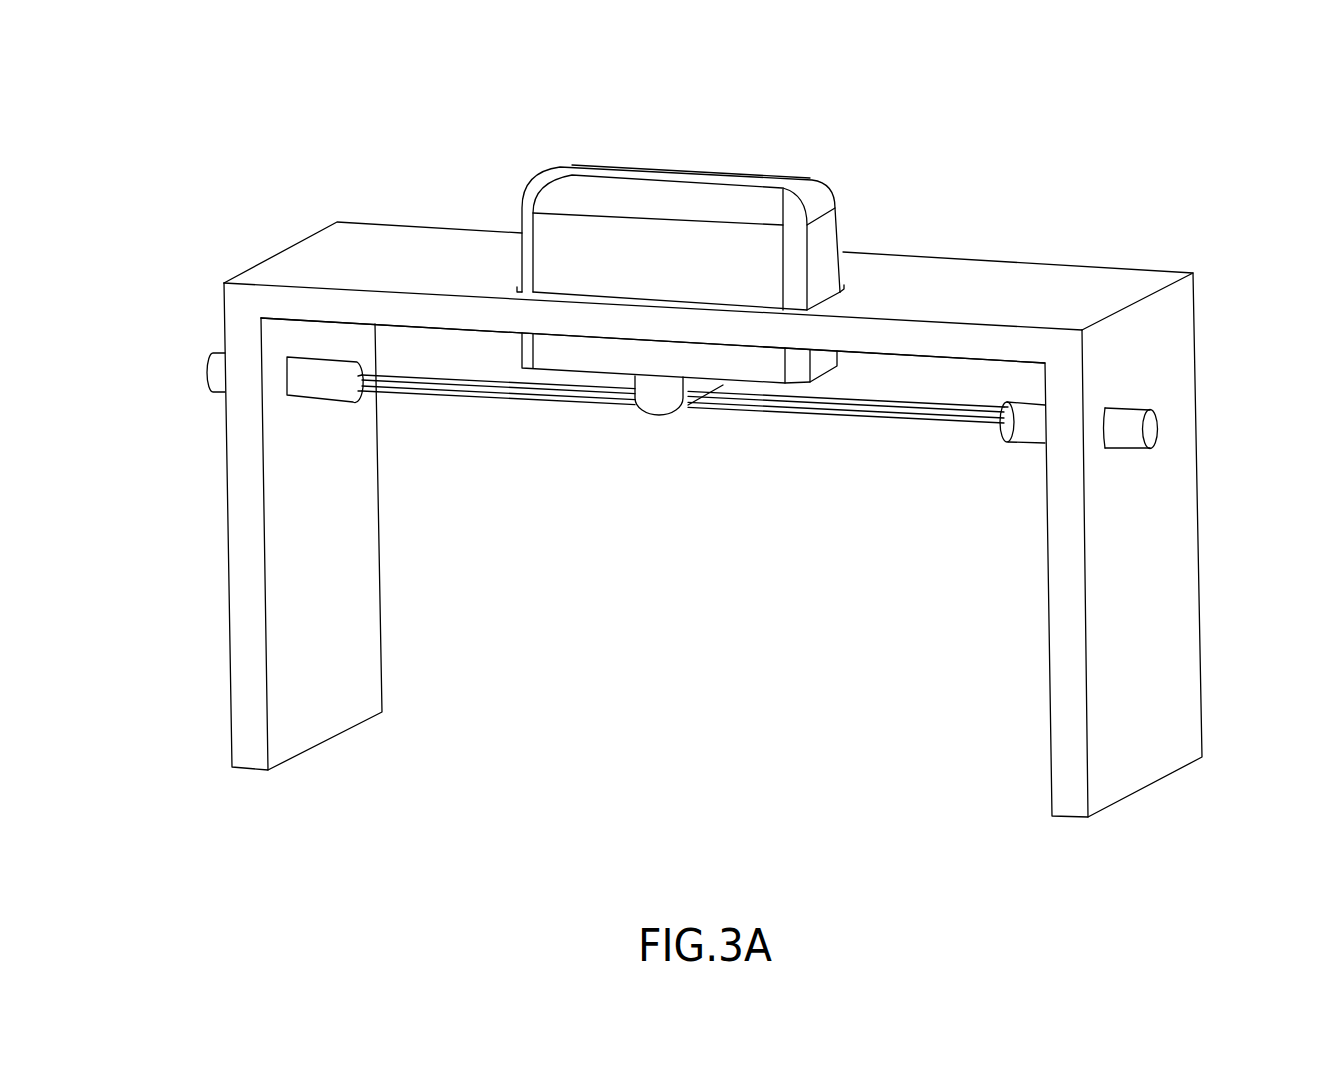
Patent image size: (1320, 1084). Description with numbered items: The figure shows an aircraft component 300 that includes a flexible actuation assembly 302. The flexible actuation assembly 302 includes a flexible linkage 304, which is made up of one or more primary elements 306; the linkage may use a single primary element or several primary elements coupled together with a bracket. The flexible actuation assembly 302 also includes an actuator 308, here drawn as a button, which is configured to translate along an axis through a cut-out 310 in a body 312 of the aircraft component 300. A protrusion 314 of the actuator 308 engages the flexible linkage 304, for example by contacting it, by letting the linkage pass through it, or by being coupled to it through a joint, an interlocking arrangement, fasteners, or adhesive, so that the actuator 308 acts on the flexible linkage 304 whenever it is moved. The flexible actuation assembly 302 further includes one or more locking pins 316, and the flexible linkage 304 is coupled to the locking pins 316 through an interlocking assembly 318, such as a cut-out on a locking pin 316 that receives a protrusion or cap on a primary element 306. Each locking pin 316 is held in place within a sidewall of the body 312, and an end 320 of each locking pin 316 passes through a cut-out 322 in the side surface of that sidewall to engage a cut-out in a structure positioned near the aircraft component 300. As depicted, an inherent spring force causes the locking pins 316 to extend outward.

The aircraft component 300 is at (287, 80).
The flexible actuation assembly 302 is at (725, 748).
The flexible linkage 304 is at (702, 502).
The primary element 306 is at (452, 388).
The actuator 308 is at (680, 175).
The cut-out 310 is at (842, 290).
The body 312 is at (369, 237).
The protrusion 314 is at (657, 395).
The locking pin 316 is at (322, 380).
The interlocking assembly 318 is at (363, 392).
The end 320 is at (217, 375).
The cut-out 322 is at (218, 407).